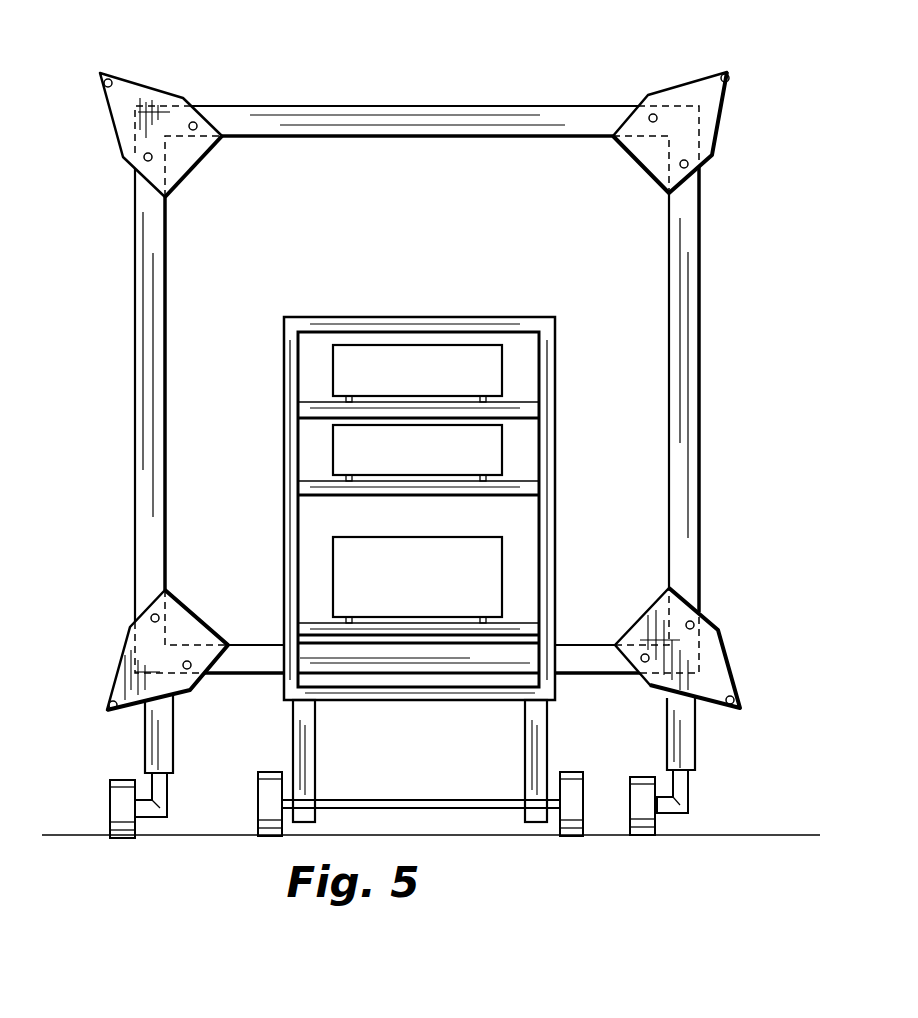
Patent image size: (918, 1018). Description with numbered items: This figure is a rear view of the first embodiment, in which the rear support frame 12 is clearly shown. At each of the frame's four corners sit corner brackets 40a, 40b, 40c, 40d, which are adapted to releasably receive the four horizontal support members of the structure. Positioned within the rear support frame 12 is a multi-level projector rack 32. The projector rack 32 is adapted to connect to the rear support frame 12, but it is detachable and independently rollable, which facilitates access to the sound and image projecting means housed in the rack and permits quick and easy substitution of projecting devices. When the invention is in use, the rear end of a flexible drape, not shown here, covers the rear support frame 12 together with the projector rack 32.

The rear support frame 12 is at (687, 246).
The multi-level projector rack 32 is at (543, 355).
The corner bracket 40a is at (128, 92).
The corner bracket 40b is at (693, 92).
The corner bracket 40c is at (127, 652).
The corner bracket 40d is at (718, 658).